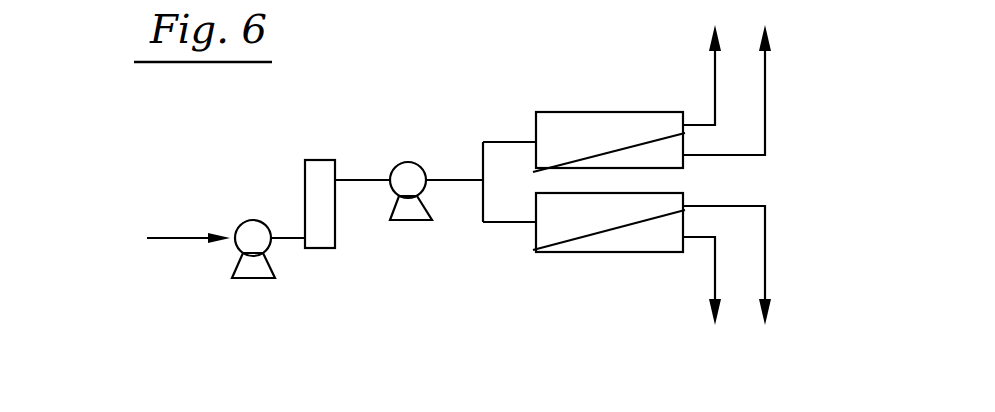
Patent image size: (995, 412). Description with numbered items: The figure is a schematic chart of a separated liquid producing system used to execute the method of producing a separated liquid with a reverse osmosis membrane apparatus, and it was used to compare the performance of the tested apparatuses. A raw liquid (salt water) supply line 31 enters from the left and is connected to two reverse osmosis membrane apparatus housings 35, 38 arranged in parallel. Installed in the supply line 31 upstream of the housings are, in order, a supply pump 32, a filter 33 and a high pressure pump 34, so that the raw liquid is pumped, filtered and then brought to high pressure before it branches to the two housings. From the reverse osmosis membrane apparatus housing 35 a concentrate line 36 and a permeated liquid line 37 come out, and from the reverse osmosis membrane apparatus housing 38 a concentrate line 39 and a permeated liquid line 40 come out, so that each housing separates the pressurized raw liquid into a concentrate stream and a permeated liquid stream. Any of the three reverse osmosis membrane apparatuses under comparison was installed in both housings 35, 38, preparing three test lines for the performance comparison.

The raw liquid supply line 31 is at (175, 238).
The supply pump 32 is at (252, 219).
The filter 33 is at (330, 248).
The high pressure pump 34 is at (403, 159).
The reverse osmosis membrane apparatus housing 35 is at (597, 112).
The concentrate line 36 is at (712, 83).
The permeated liquid line 37 is at (768, 97).
The reverse osmosis membrane apparatus housing 38 is at (555, 252).
The concentrate line 39 is at (712, 277).
The permeated liquid line 40 is at (768, 270).